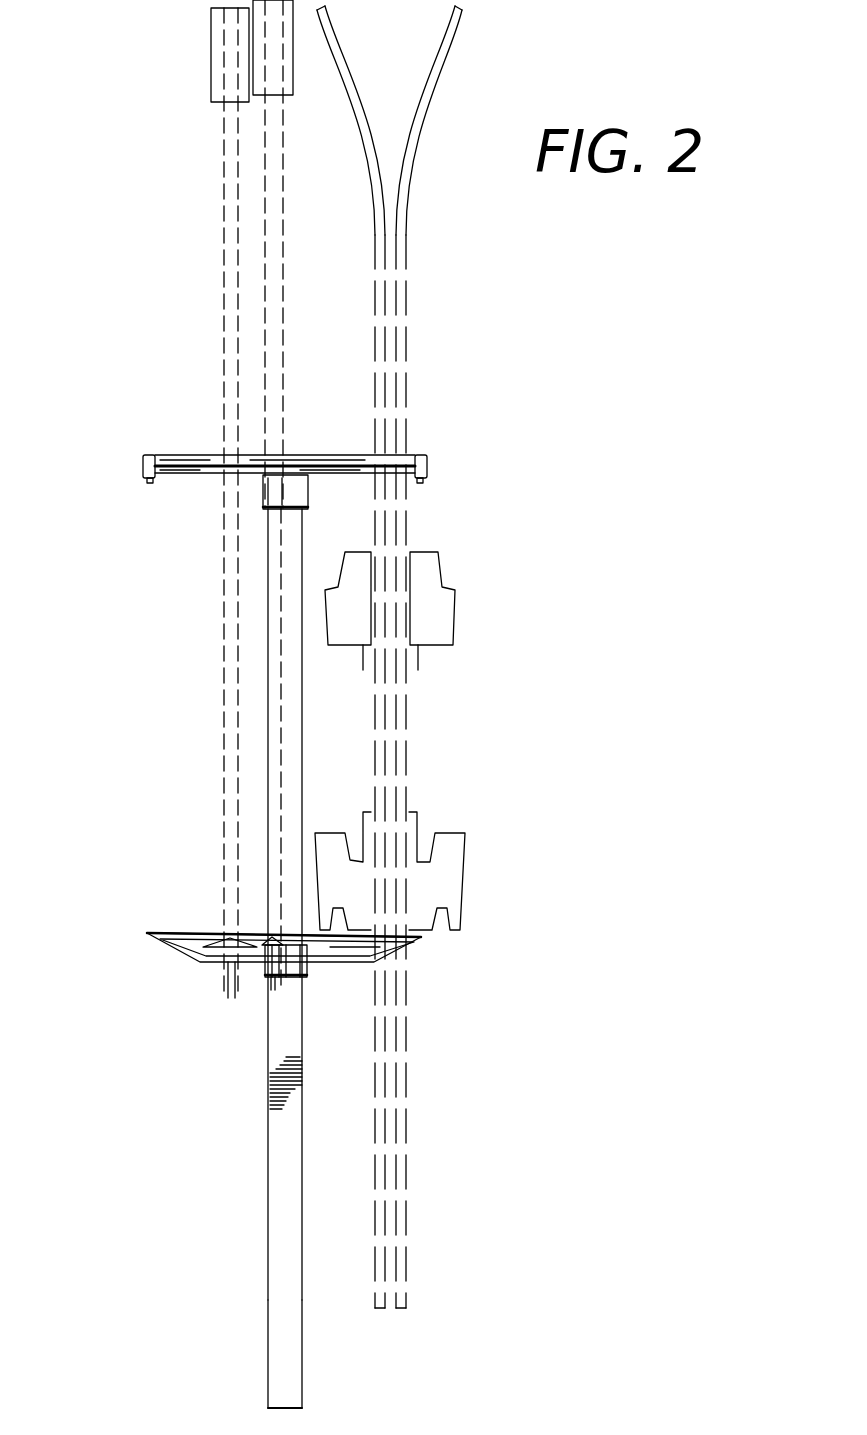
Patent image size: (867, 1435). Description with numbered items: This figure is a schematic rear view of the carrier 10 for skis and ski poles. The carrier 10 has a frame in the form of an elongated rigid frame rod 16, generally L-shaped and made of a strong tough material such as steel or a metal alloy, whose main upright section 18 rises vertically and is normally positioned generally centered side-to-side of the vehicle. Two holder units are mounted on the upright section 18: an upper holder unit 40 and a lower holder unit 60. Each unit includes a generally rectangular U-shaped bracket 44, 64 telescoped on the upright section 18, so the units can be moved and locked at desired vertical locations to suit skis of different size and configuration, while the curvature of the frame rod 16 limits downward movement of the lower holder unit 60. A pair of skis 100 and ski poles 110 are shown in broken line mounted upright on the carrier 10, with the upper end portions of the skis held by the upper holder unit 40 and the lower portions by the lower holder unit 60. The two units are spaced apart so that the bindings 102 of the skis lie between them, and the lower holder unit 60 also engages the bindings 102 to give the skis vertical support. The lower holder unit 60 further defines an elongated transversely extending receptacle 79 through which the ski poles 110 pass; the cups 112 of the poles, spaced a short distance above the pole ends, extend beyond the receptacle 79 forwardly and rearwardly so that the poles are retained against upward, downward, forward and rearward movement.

The carrier 10 is at (214, 1133).
The frame rod 16 is at (267, 1211).
The upright section 18 is at (283, 1322).
The upper holder unit 40 is at (185, 479).
The U-shaped bracket 44 is at (262, 503).
The lower holder unit 60 is at (177, 961).
The U-shaped bracket 64 is at (307, 970).
The receptacle 79 is at (357, 947).
The skis 100 is at (388, 258).
The bindings 102 is at (459, 831).
The ski poles 110 is at (264, 231).
The cups 112 is at (210, 937).